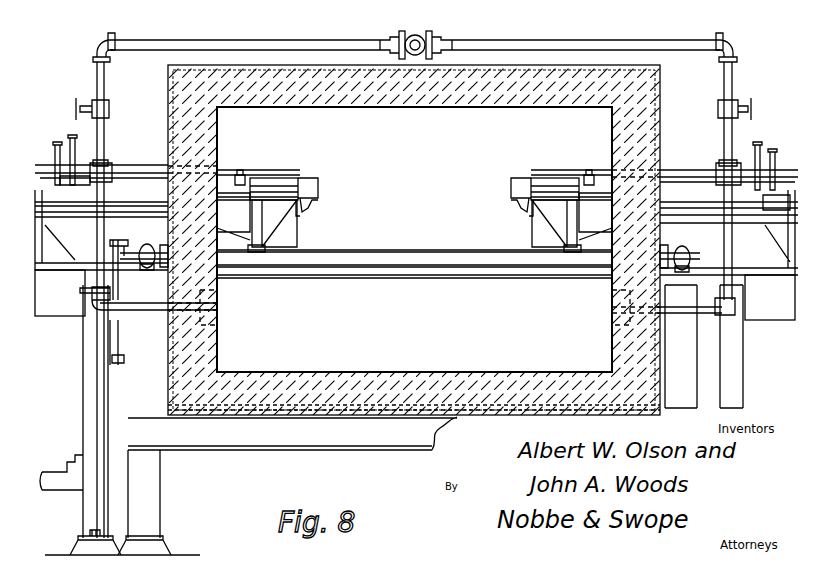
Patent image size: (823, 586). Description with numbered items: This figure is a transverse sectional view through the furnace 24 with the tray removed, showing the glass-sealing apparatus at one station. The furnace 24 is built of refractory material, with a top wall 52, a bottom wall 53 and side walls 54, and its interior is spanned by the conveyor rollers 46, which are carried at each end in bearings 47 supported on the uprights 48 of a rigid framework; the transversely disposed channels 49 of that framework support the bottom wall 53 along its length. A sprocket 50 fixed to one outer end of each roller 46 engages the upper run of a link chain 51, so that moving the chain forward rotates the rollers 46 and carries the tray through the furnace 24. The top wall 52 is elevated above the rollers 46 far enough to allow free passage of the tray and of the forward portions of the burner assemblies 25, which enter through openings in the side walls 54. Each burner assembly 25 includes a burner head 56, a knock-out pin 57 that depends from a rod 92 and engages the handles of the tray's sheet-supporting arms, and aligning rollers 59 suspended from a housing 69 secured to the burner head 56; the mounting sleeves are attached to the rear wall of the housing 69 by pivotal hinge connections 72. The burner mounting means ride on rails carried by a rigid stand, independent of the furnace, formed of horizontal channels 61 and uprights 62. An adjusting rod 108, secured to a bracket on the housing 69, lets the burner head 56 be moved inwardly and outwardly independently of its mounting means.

The furnace 24 is at (176, 85).
The burner assembly 25 is at (313, 171).
The roller 46 is at (372, 268).
The bearing 47 is at (692, 244).
The upright 48 is at (140, 497).
The channel 49 is at (208, 432).
The sprocket 50 is at (113, 250).
The link chain 51 is at (125, 360).
The top wall 52 is at (302, 96).
The bottom wall 53 is at (298, 384).
The side wall 54 is at (196, 130).
The burner head 56 is at (310, 182).
The knock-out pin 57 is at (303, 210).
The aligning roller 59 is at (258, 252).
The channel 61 is at (52, 300).
The upright 62 is at (98, 378).
The housing 69 is at (272, 217).
The pivotal hinge connection 72 is at (242, 181).
The rod 92 is at (283, 197).
The adjusting rod 108 is at (133, 168).